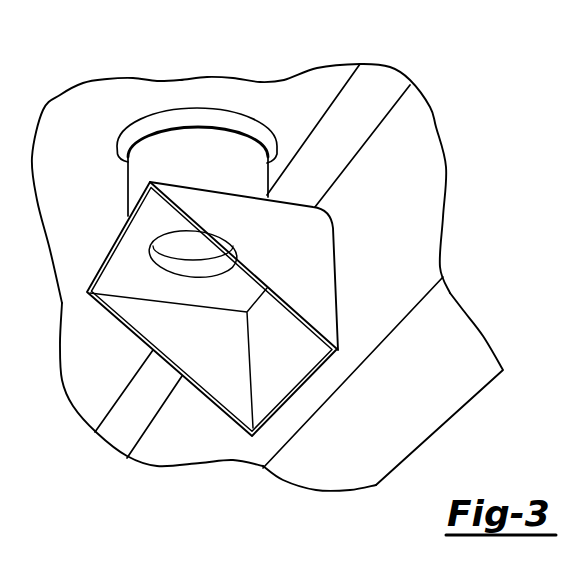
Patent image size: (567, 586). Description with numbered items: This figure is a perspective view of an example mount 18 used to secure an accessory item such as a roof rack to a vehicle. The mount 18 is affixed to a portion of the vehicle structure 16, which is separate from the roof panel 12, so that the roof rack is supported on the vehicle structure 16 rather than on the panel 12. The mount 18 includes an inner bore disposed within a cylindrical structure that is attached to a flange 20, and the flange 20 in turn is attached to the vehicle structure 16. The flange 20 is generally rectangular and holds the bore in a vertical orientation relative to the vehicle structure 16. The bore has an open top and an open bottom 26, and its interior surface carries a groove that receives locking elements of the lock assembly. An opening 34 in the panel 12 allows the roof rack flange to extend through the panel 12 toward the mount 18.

The roof panel 12 is at (292, 99).
The vehicle structure 16 is at (403, 237).
The mount 18 is at (284, 189).
The flange 20 is at (239, 309).
The bottom 26 is at (185, 272).
The opening 34 is at (131, 129).